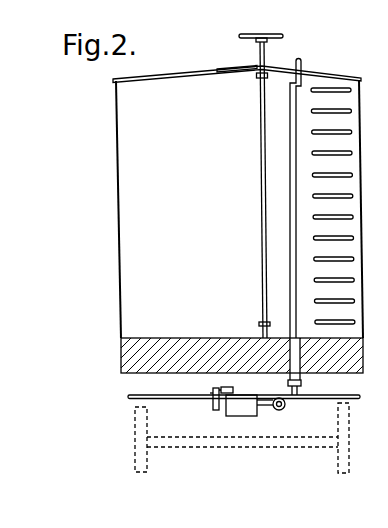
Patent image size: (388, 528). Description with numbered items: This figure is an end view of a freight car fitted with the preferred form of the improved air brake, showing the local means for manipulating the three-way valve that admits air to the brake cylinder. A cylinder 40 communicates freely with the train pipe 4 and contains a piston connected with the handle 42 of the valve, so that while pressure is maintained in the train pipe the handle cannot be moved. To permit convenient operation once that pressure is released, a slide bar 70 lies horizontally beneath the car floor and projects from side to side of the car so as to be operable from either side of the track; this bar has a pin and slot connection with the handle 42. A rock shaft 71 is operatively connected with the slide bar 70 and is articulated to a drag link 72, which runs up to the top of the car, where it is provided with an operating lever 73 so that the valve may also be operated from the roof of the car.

The train pipe 4 is at (285, 409).
The cylinder 40 is at (245, 411).
The handle 42 is at (227, 388).
The slide bar 70 is at (333, 395).
The rock shaft 71 is at (285, 381).
The drag link 72 is at (292, 209).
The operating lever 73 is at (302, 65).